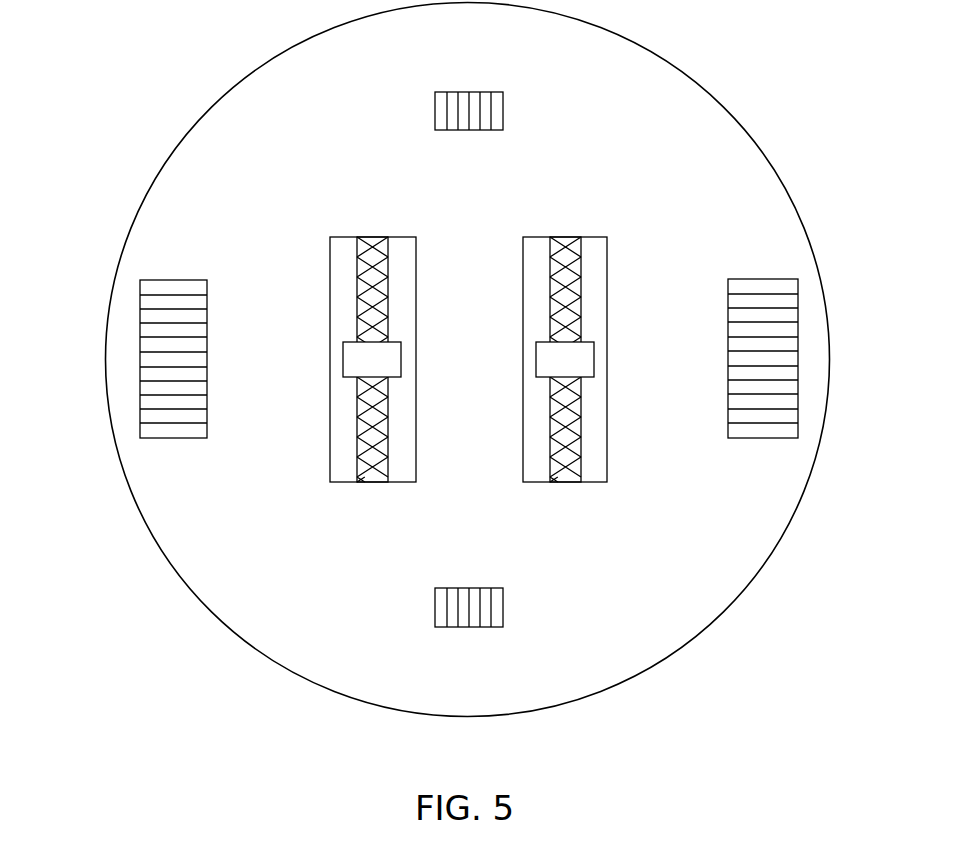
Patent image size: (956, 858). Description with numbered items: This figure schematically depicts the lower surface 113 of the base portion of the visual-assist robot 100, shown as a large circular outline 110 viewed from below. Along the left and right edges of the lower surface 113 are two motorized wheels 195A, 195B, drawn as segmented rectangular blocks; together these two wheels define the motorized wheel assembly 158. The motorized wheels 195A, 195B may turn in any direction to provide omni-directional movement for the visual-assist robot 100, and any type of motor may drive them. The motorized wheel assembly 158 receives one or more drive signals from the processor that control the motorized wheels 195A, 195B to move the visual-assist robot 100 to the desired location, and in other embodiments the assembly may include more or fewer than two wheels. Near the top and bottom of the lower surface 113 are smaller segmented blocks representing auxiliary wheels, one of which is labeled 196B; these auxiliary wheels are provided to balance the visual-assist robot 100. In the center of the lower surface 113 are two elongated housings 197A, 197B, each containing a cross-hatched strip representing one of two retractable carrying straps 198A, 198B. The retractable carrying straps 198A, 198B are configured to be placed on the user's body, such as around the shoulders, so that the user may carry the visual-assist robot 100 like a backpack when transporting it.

The visual-assist robot 100 is at (730, 67).
The circular base / platen 110 is at (243, 78).
The lower surface 113 is at (483, 549).
The motorized wheel assembly 158 is at (127, 332).
The motorized wheel 195A is at (173, 438).
The motorized wheel 195B is at (760, 438).
The auxiliary wheel 196B is at (503, 110).
The first linear guide 197A is at (397, 410).
The second linear guide 197B is at (540, 410).
The retractable carrying strap 198A is at (388, 280).
The retractable carrying strap 198B is at (550, 296).